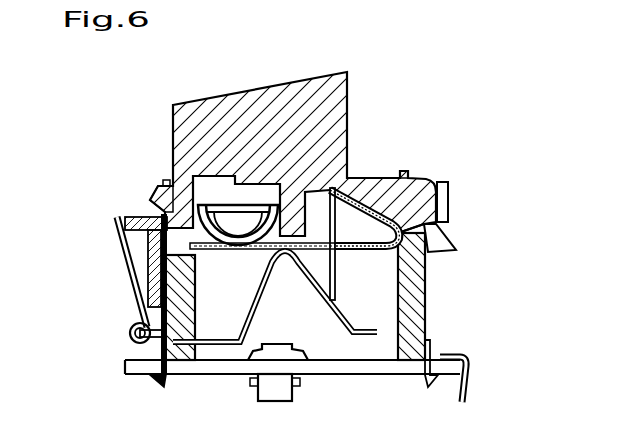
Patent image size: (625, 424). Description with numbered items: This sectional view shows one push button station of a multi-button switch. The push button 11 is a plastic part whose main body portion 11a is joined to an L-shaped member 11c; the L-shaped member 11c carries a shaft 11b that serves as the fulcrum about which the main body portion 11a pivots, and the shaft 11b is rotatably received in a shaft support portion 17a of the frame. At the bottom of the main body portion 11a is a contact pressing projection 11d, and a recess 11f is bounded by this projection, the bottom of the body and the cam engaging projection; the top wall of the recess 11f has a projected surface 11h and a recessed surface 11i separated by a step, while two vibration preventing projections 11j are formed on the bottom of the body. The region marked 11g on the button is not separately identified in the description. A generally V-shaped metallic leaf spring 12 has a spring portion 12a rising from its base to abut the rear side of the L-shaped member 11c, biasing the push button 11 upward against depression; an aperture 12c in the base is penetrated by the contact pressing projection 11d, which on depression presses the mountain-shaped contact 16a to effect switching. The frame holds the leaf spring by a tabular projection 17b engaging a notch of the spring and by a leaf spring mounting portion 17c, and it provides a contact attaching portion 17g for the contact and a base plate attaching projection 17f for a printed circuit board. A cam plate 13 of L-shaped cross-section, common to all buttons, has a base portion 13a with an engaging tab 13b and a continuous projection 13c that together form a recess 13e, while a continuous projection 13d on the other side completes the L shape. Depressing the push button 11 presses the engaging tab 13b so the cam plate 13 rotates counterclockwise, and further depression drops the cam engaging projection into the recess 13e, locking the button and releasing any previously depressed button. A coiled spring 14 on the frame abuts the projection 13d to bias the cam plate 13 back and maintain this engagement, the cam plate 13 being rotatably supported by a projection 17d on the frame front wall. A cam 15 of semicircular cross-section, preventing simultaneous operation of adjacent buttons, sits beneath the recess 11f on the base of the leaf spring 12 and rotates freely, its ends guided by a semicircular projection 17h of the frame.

The push button 11 is at (349, 80).
The main body portion 11a is at (298, 98).
The shaft 11b is at (450, 191).
The L-shaped member 11c is at (164, 184).
The contact pressing projection 11d is at (330, 287).
The recess 11f is at (178, 108).
The housing portion 11g is at (244, 172).
The projected surface 11h is at (270, 172).
The recessed surface 11i is at (212, 172).
The vibration preventing projections 11j is at (350, 262).
The leaf spring 12 is at (212, 318).
The spring portion 12a is at (366, 212).
The aperture 12c is at (287, 262).
The cam plate 13 is at (158, 208).
The base portion 13a is at (138, 292).
The engaging tab 13b is at (160, 198).
The continuous projection 13c is at (148, 262).
The continuous projection 13d is at (128, 218).
The recess 13e is at (148, 238).
The coiled spring 14 is at (129, 332).
The cam 15 is at (240, 244).
The mountain-shaped contact 16a is at (352, 332).
The shaft support portion 17a is at (442, 226).
The tabular projection 17b is at (405, 171).
The leaf spring mounting portion 17c is at (150, 306).
The projection 17d is at (158, 336).
The base plate attaching projection 17f is at (158, 382).
The contact attaching portion 17g is at (183, 372).
The semicircular projection 17h is at (163, 186).